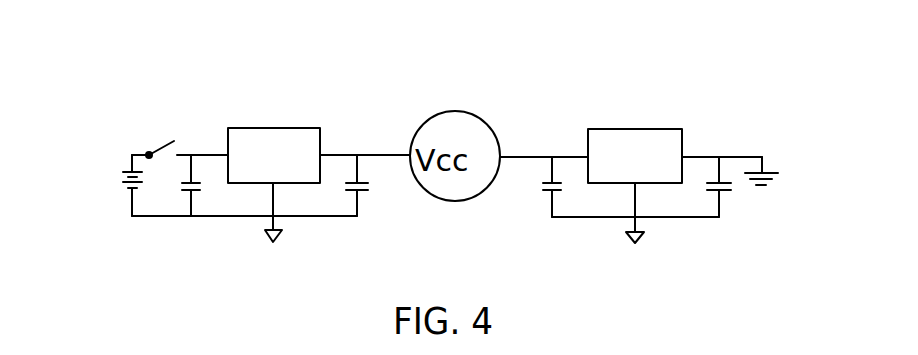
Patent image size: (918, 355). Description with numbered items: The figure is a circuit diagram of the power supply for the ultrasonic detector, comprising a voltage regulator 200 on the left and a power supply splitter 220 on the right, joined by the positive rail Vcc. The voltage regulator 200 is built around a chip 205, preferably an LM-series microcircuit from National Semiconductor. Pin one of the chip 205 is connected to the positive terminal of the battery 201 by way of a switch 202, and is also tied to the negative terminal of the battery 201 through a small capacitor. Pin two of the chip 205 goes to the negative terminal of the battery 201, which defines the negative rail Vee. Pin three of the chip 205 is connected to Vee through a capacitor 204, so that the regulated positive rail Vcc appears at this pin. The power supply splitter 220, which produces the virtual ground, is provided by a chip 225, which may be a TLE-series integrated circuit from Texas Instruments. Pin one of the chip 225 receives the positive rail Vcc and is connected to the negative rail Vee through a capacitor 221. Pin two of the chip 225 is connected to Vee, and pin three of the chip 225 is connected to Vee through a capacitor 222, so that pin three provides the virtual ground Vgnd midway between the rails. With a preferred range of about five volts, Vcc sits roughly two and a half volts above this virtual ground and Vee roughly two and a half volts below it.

The voltage regulator 200 is at (248, 96).
The battery 201 is at (122, 192).
The switch 202 is at (154, 133).
The capacitor 204 is at (367, 187).
The chip 205 is at (290, 128).
The power supply splitter 220 is at (614, 104).
The capacitor 221 is at (540, 187).
The capacitor 222 is at (730, 188).
The chip 225 is at (643, 128).